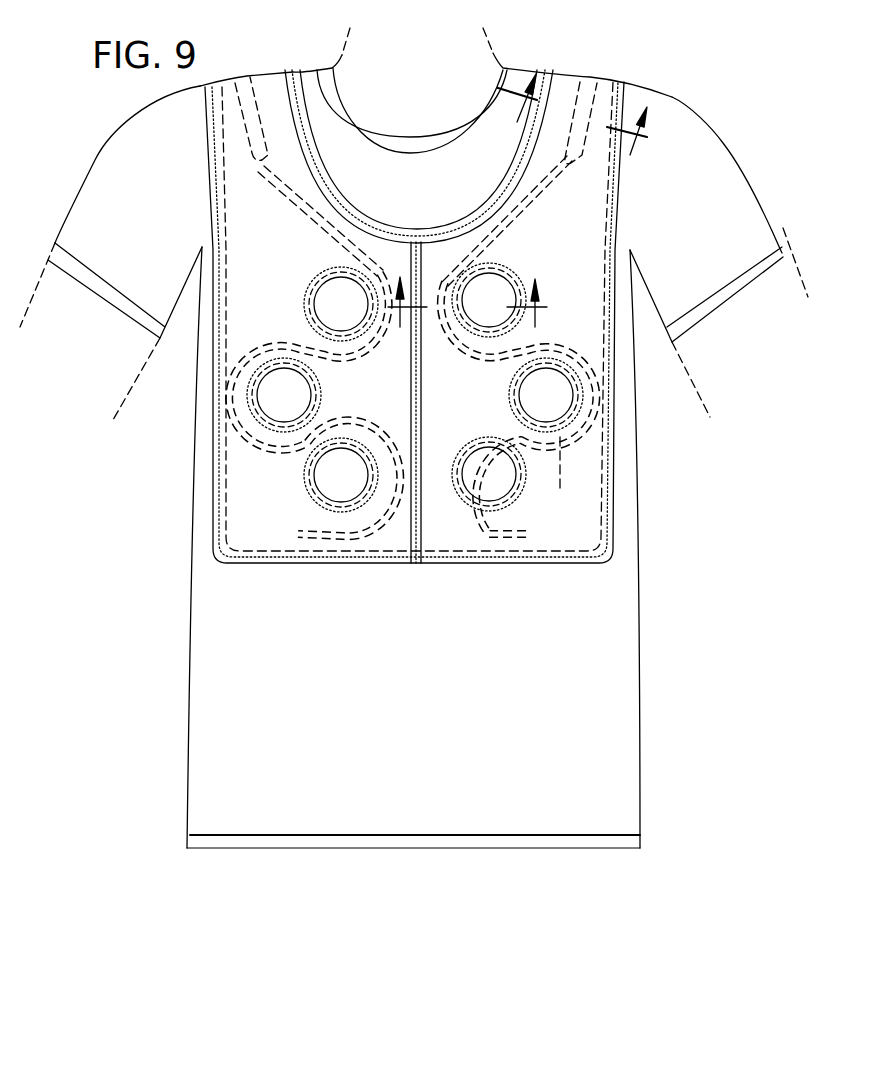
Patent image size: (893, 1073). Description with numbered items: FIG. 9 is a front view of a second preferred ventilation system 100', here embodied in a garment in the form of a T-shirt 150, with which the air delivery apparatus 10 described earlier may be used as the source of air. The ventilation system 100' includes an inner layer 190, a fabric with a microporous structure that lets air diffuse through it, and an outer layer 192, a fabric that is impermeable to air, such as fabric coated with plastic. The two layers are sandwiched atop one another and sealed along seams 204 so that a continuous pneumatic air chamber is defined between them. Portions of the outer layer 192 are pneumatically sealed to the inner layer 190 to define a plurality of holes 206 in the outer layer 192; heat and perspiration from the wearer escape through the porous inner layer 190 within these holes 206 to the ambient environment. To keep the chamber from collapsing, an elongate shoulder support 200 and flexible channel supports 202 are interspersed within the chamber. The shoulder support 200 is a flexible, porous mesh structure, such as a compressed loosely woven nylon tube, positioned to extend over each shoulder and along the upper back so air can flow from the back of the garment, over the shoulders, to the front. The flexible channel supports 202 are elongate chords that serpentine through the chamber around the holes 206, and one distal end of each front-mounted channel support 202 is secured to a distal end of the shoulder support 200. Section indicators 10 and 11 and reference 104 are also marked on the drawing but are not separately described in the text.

The ventilation system 100' is at (485, 128).
The air delivery apparatus 10 is at (575, 124).
The section line 11 is at (467, 309).
The therapy pad 104 is at (515, 501).
The T-shirt 150 is at (621, 655).
The inner layer 190 is at (200, 610).
The outer layer 192 is at (363, 407).
The shoulder support 200 is at (253, 150).
The flexible channel supports 202 is at (300, 217).
The seams 204 is at (490, 210).
The holes 206 is at (327, 310).